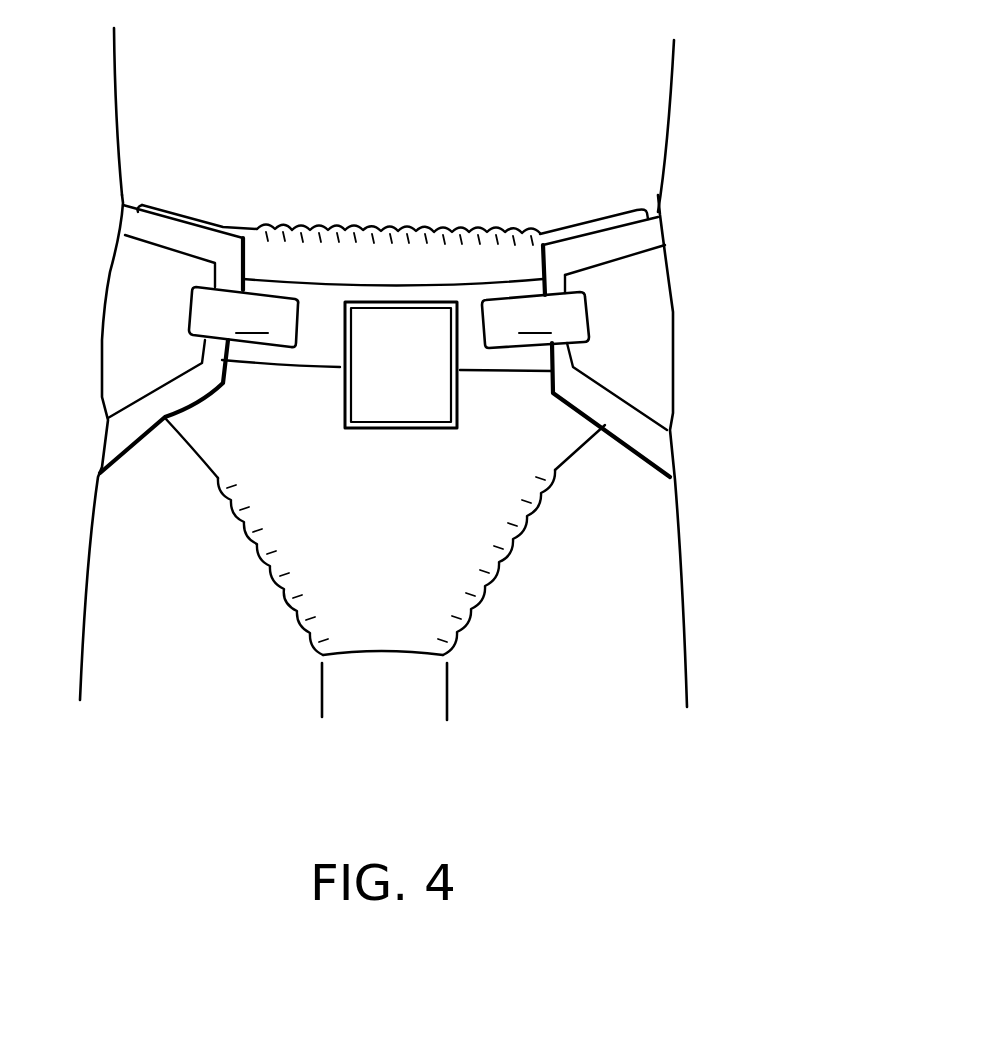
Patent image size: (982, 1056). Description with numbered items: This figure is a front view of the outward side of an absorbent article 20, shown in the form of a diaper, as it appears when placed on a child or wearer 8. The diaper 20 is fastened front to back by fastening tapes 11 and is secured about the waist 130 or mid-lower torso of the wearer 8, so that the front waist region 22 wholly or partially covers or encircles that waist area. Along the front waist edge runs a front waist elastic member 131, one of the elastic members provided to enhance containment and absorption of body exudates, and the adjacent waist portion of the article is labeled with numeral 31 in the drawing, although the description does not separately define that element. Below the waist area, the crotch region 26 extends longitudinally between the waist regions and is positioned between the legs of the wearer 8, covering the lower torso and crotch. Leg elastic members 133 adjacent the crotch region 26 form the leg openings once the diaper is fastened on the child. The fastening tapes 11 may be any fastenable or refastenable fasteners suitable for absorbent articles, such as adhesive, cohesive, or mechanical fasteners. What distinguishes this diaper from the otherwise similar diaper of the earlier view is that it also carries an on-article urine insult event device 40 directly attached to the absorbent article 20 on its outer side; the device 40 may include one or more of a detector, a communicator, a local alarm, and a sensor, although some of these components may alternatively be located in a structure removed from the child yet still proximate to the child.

The wearer 8 is at (700, 108).
The absorbent article 20 is at (123, 292).
The front waist feature 31 is at (221, 228).
The waist 130 is at (700, 192).
The front waist elastic member 131 is at (500, 262).
The fastening tapes 11 is at (389, 317).
The urine insult event device 40 is at (357, 430).
The front waist region 22 is at (520, 436).
The leg elastic members 133 is at (242, 550).
The crotch region 26 is at (385, 675).